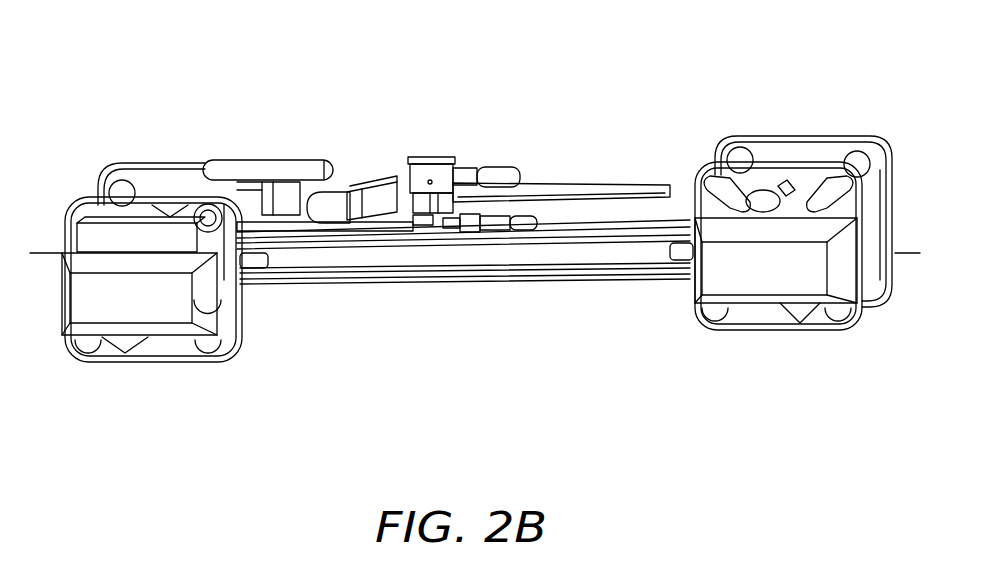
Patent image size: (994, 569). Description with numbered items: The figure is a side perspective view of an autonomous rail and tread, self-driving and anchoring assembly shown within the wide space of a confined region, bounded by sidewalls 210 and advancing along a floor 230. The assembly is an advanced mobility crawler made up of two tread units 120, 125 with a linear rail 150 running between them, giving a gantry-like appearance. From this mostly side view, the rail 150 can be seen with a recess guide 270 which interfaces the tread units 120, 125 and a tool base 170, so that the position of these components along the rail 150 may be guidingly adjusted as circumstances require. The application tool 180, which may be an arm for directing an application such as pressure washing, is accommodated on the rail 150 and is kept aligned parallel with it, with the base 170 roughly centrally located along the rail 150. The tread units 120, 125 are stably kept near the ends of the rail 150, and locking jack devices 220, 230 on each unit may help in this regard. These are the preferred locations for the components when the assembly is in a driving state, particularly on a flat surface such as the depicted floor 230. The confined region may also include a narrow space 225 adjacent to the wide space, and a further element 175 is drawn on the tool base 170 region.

The tread unit 120 is at (112, 317).
The tread unit 125 is at (747, 284).
The linear rail 150 is at (377, 260).
The tool base 170 is at (432, 225).
The carriage block 175 is at (407, 198).
The application tool 180 is at (358, 170).
The sidewall 210 is at (585, 144).
The locking jack device 220 is at (272, 262).
The narrow space 225 is at (672, 247).
The floor 230 is at (353, 383).
The recess guide 270 is at (583, 250).